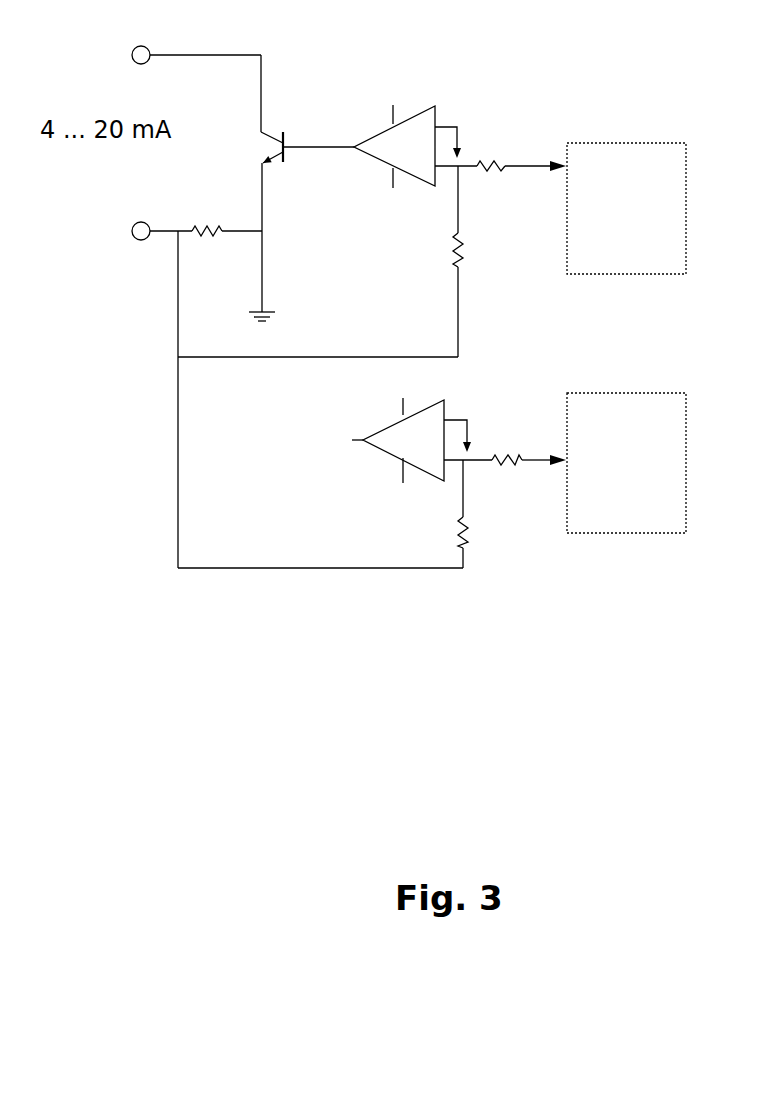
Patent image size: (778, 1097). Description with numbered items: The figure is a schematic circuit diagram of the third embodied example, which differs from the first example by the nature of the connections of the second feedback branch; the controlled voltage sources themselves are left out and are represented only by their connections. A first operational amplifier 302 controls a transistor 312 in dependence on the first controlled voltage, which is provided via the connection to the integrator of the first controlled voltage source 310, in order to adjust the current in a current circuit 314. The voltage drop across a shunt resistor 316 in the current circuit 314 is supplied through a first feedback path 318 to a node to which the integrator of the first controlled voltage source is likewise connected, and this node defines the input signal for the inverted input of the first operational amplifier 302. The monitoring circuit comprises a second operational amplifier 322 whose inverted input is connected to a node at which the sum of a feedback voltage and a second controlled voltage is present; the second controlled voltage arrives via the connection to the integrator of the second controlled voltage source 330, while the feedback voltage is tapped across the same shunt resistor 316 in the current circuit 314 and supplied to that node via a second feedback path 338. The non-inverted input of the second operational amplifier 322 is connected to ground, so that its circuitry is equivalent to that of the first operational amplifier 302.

The first operational amplifier 302 is at (405, 133).
The integrator of the first controlled voltage source 310 is at (626, 208).
The transistor 312 is at (285, 147).
The current circuit 314 is at (178, 56).
The shunt resistor 316 is at (212, 243).
The first feedback path 318 is at (305, 362).
The second operational amplifier 322 is at (430, 463).
The integrator of the second controlled voltage source 330 is at (626, 463).
The second feedback path 338 is at (335, 568).